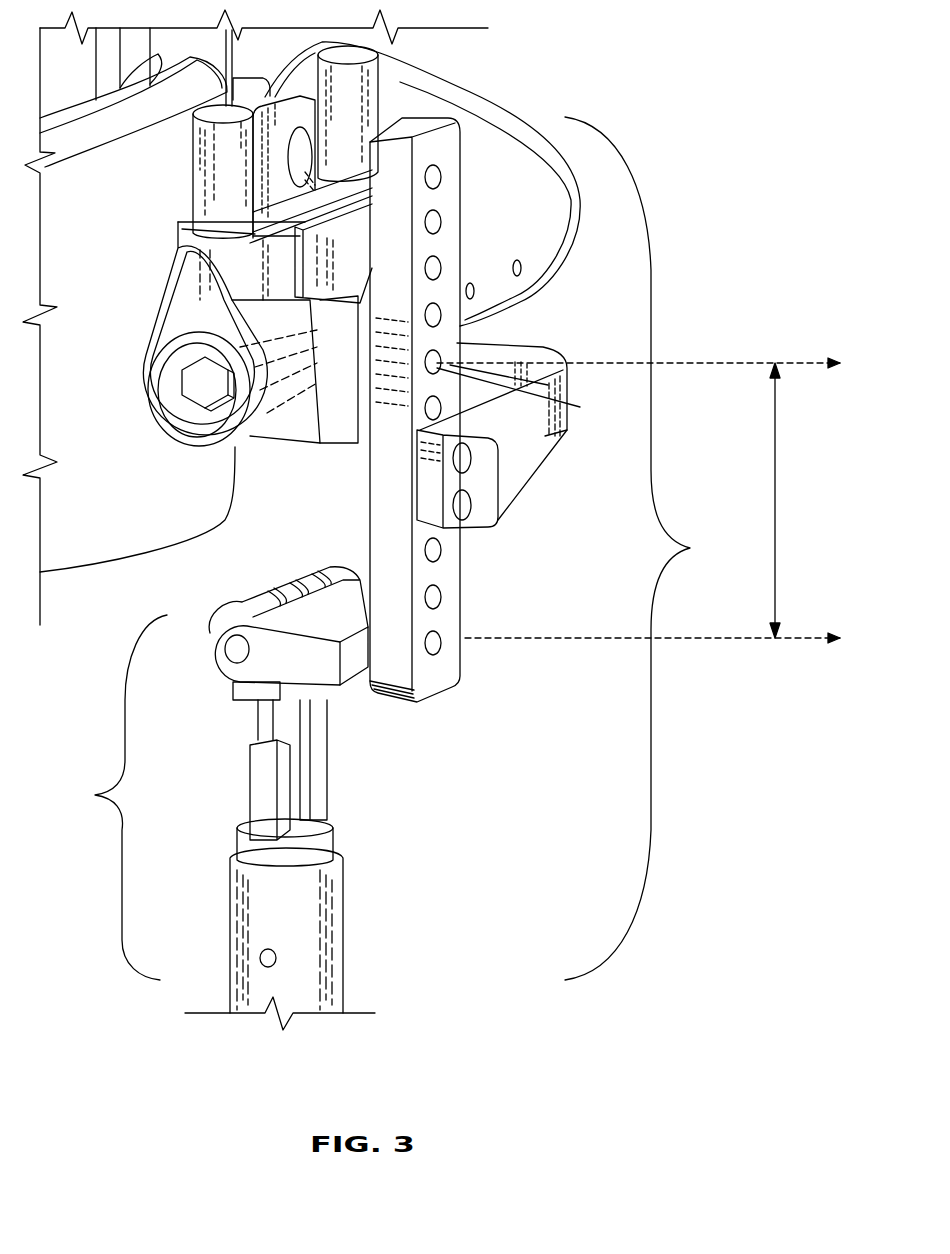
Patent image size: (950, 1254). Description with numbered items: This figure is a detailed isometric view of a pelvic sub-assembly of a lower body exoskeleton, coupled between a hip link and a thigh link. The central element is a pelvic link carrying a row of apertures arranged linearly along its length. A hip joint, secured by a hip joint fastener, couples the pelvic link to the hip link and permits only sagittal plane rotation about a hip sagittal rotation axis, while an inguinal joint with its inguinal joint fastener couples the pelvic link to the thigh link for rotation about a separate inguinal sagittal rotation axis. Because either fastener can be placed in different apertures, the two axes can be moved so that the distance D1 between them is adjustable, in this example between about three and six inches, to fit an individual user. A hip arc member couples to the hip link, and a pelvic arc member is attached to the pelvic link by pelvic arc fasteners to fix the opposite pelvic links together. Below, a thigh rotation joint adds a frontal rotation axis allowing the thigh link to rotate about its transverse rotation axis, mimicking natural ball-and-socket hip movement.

The distance D1 is at (777, 438).